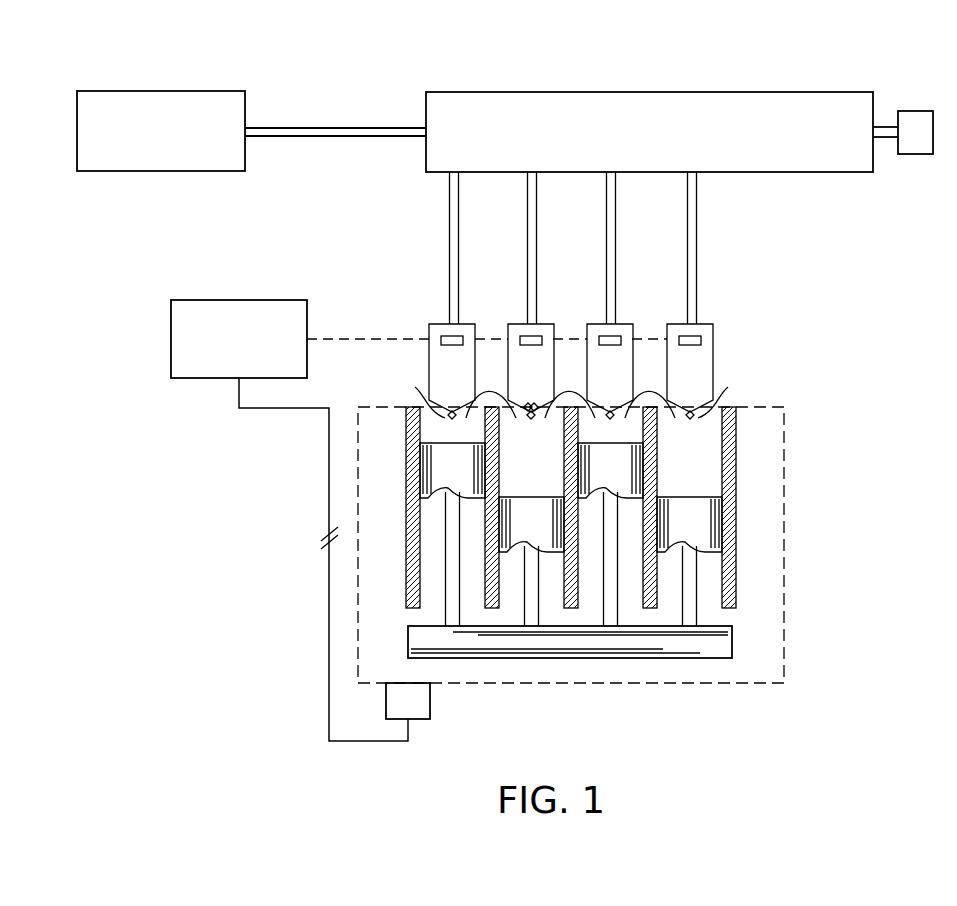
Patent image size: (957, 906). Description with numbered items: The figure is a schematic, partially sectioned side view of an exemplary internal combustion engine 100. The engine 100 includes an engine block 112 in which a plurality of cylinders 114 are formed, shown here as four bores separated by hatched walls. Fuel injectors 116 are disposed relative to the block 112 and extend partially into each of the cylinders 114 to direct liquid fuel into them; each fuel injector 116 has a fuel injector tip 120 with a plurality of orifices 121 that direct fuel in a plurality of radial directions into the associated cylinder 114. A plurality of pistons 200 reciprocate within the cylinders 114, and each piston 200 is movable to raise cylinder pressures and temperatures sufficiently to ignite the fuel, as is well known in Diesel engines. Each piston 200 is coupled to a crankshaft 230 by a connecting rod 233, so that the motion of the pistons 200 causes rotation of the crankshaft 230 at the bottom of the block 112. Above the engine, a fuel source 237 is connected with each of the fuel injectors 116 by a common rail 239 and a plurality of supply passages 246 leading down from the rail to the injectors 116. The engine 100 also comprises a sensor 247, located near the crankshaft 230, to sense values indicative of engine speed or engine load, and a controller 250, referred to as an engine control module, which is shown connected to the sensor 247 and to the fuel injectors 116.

The internal combustion engine 100 is at (289, 462).
The engine block 112 is at (784, 484).
The cylinder 114 is at (690, 449).
The fuel injector 116 is at (713, 355).
The fuel injector tip 120 is at (531, 420).
The orifice 121 is at (562, 392).
The piston 200 is at (707, 527).
The crankshaft 230 is at (720, 640).
The connecting rod 233 is at (690, 617).
The fuel source 237 is at (175, 90).
The common rail 239 is at (760, 92).
The supply passage 246 is at (697, 252).
The sensor 247 is at (430, 705).
The controller 250 is at (239, 300).